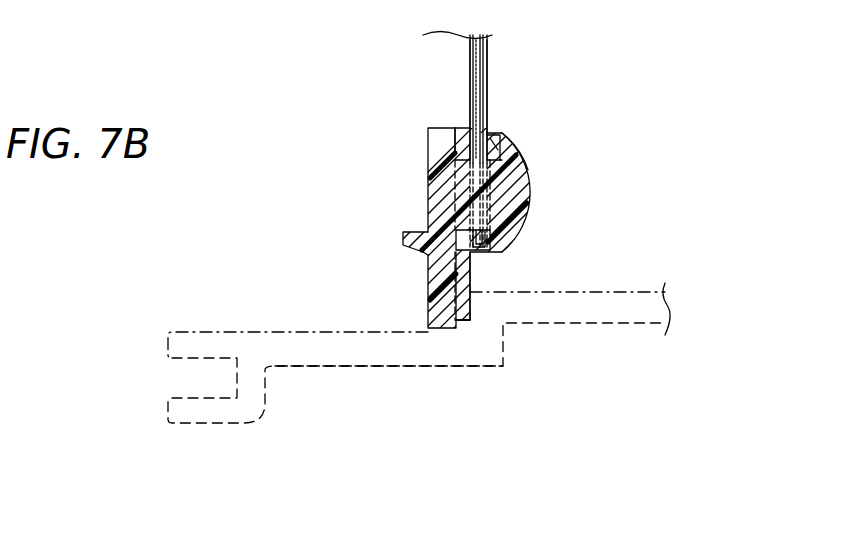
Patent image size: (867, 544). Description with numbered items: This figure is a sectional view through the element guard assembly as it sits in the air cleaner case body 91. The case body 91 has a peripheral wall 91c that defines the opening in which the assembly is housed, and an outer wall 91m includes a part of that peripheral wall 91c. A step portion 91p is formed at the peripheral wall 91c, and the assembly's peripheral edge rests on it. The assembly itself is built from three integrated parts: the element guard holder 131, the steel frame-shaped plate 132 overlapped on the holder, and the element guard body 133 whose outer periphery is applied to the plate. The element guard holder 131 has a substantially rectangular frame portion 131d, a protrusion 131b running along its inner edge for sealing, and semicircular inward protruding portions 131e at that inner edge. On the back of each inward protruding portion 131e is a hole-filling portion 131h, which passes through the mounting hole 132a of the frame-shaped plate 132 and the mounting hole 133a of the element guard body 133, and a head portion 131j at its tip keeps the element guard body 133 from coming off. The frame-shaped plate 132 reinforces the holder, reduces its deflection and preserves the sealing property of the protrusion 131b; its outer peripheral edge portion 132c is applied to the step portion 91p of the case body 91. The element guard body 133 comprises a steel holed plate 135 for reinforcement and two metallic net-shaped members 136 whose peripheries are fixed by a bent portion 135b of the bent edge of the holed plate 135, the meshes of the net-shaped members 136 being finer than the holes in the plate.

The element guard holder 131 is at (418, 139).
The protrusion 131b is at (403, 243).
The frame portion 131d is at (432, 285).
The inward protruding portion 131e is at (433, 172).
The hole-filling portion 131h is at (526, 199).
The head portion 131j is at (508, 233).
The frame-shaped plate 132 is at (461, 318).
The mounting hole 132a is at (462, 193).
The outer peripheral edge portion 132c is at (458, 302).
The element guard body 133 is at (497, 53).
The mounting hole 133a is at (510, 168).
The holed plate 135 is at (455, 57).
The bent portion 135b is at (494, 140).
The net-shaped member 136 is at (467, 80).
The case body 91 is at (335, 372).
The peripheral wall 91c is at (235, 332).
The outer wall 91m is at (617, 325).
The step portion 91p is at (453, 305).